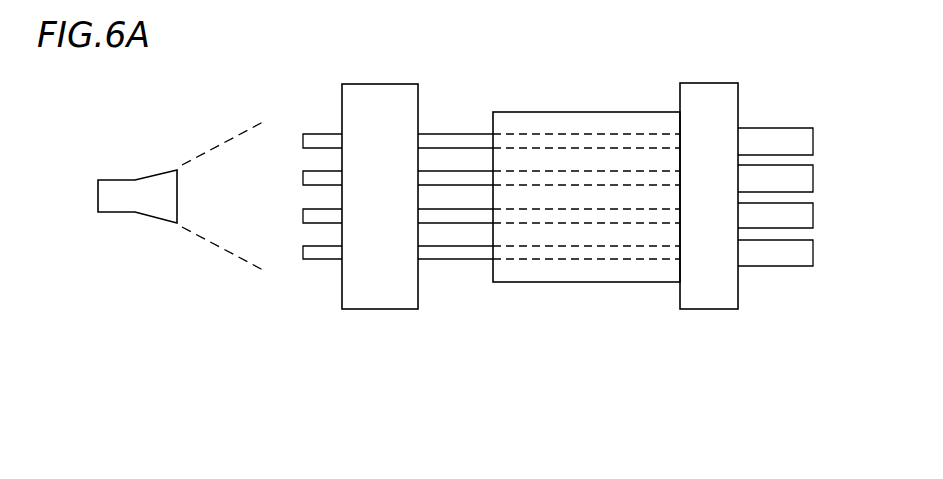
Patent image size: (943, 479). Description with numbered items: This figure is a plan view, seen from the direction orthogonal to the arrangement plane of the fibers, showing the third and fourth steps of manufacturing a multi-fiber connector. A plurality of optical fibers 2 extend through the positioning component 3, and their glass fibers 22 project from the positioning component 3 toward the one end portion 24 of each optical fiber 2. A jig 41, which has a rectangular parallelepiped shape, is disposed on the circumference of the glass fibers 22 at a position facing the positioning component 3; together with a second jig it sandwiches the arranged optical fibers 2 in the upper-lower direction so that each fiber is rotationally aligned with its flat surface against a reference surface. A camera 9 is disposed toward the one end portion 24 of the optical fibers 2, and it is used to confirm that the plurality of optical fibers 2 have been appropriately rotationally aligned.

The optical fiber 2 is at (783, 117).
The positioning component 3 is at (601, 106).
The camera 9 is at (132, 202).
The glass fiber 22 is at (458, 134).
The one end portion 24 is at (303, 252).
The jig 41 is at (384, 312).